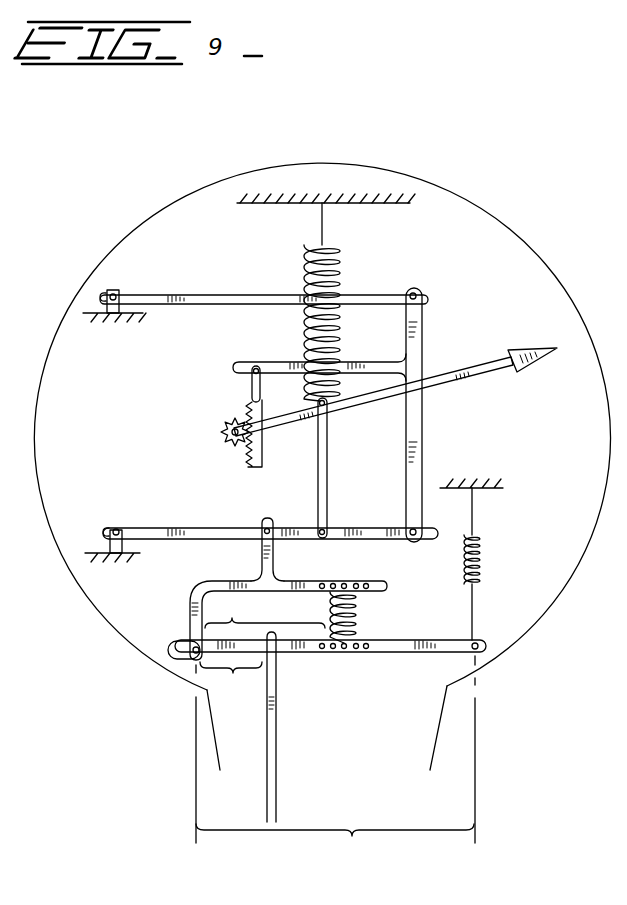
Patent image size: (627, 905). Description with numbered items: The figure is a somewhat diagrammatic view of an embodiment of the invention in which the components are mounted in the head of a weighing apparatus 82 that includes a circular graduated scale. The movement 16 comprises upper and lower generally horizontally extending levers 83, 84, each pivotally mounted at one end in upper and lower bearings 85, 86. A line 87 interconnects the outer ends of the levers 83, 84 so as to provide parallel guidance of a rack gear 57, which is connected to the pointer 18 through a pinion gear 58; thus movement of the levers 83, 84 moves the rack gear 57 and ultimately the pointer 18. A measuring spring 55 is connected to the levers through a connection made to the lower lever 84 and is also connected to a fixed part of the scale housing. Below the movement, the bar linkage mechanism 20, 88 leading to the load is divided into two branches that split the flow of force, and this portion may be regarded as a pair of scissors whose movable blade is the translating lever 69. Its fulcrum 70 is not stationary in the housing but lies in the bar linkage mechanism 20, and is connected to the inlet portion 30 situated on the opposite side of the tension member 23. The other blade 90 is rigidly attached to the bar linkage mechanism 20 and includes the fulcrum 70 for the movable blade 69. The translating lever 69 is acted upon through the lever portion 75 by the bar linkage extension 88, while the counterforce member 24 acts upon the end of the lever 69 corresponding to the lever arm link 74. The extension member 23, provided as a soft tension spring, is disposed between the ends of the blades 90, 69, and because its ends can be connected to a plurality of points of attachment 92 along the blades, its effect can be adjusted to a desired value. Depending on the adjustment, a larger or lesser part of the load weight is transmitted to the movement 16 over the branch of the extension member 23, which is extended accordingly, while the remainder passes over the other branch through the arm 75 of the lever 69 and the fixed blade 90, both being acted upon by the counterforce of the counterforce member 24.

The movement 16 is at (151, 419).
The pointer 18 is at (456, 368).
The bar linkage mechanism 20 is at (274, 557).
The extension member 23 is at (357, 615).
The counterforce member 24 is at (484, 566).
The inlet portion 30 is at (256, 543).
The measuring spring 55 is at (342, 257).
The rack gear 57 is at (262, 445).
The pinion gear 58 is at (222, 424).
The translating lever 69 is at (395, 655).
The fulcrum 70 is at (186, 662).
The lever arm link 74 is at (335, 761).
The lever portion 75 is at (262, 664).
The weighing apparatus 82 is at (518, 203).
The upper lever 83 is at (219, 295).
The lower lever 84 is at (190, 528).
The upper bearing 85 is at (120, 294).
The lower bearing 86 is at (114, 528).
The line 87 is at (424, 420).
The bar linkage extension 88 is at (277, 737).
The fixed scissors blade 90 is at (308, 581).
The points of attachment 92 is at (358, 652).